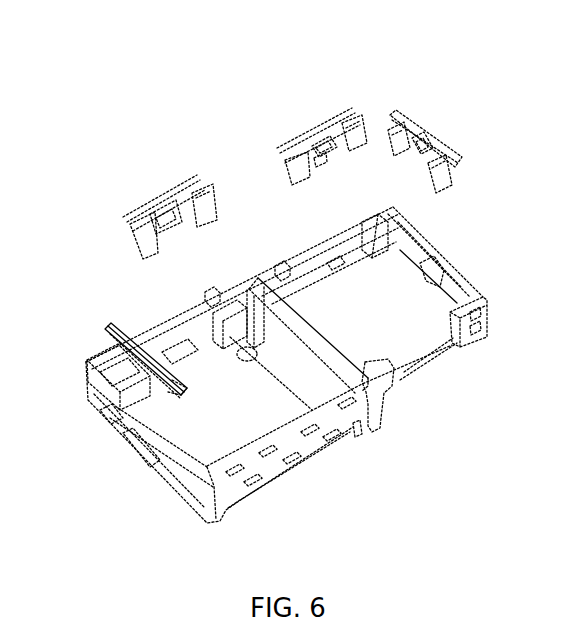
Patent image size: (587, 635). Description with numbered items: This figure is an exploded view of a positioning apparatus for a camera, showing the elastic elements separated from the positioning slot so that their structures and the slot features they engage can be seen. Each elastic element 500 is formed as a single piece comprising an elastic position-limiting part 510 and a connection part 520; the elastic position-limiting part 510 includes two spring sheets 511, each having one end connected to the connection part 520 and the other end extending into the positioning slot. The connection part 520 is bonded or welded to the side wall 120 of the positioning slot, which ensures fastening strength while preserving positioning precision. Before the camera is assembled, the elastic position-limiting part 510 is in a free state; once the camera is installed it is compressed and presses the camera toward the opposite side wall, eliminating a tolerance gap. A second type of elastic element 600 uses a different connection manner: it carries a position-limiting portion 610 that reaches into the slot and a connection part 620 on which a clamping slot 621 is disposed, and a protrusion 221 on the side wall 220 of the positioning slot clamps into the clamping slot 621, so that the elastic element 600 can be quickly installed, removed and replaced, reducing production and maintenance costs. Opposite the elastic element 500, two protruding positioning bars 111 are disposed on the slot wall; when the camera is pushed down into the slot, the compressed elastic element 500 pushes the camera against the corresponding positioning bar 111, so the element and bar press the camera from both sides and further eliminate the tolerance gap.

The positioning bar 111 is at (254, 319).
The side wall 120 is at (195, 466).
The side wall 220 is at (470, 287).
The protrusion 221 is at (427, 270).
The elastic element 500 is at (164, 196).
The elastic position-limiting part 510 is at (118, 331).
The spring sheet 511 is at (171, 392).
The connection part 520 is at (138, 355).
The elastic element 600 is at (284, 153).
The clip leg 610 is at (390, 129).
The connection part 620 is at (403, 109).
The clamping slot 621 is at (421, 147).